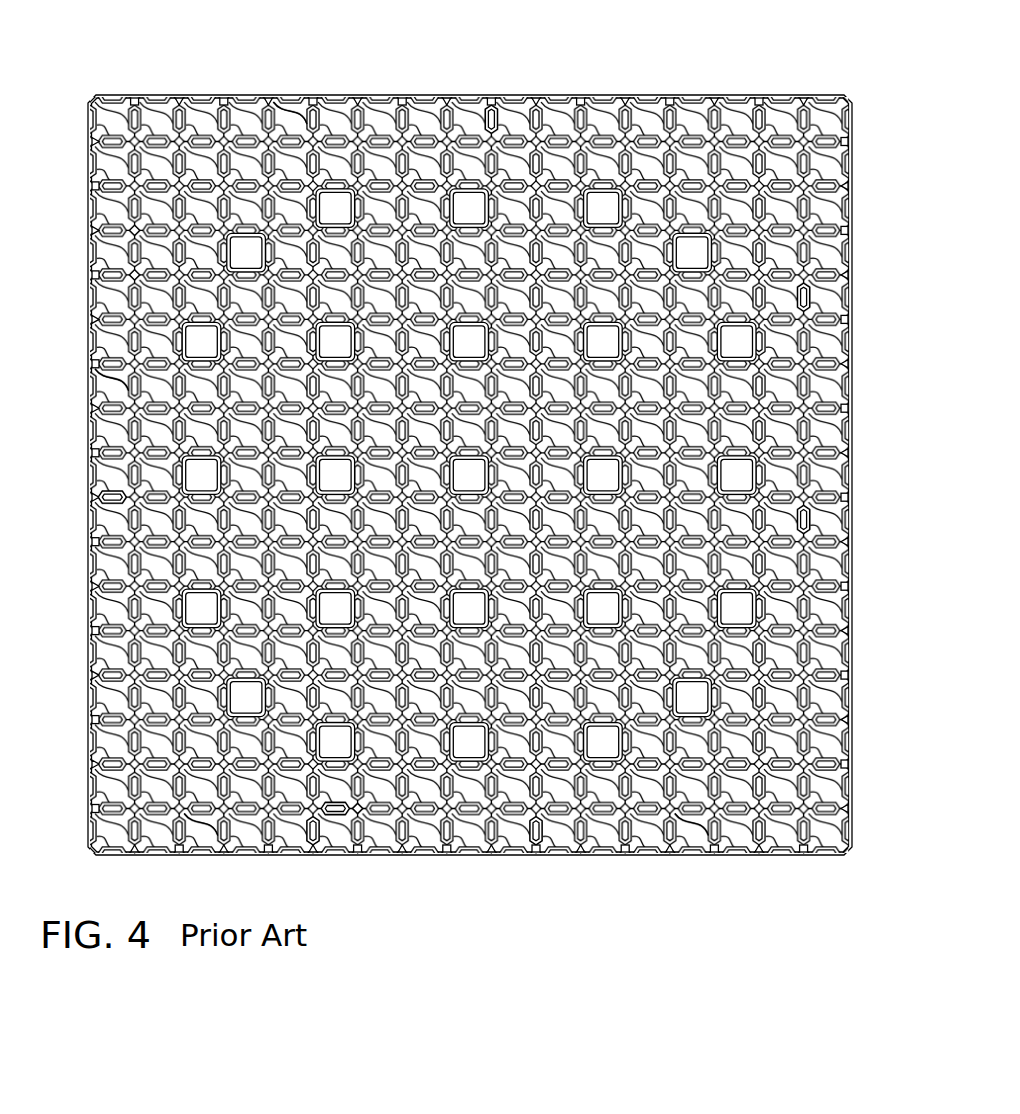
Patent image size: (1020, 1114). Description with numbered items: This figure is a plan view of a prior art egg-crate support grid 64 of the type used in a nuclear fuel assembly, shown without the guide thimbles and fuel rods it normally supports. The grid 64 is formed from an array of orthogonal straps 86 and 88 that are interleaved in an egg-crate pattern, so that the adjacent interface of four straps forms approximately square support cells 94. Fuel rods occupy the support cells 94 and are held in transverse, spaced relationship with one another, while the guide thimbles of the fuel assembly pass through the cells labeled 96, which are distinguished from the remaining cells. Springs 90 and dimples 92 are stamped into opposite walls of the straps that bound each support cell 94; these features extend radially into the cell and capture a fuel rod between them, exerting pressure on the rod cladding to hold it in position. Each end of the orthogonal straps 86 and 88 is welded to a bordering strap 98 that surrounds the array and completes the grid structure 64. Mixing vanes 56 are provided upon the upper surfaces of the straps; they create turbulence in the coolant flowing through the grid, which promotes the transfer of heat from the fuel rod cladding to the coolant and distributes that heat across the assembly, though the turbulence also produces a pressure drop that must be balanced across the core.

The transverse grid 64 is at (469, 452).
The mixing vane 56 is at (503, 133).
The strap 86 is at (210, 110).
The strap 88 is at (130, 272).
The spring 90 is at (351, 828).
The dimple 92 is at (328, 828).
The support cell 94 is at (283, 122).
The guide thimble cell 96 is at (469, 475).
The bordering strap 98 is at (850, 806).